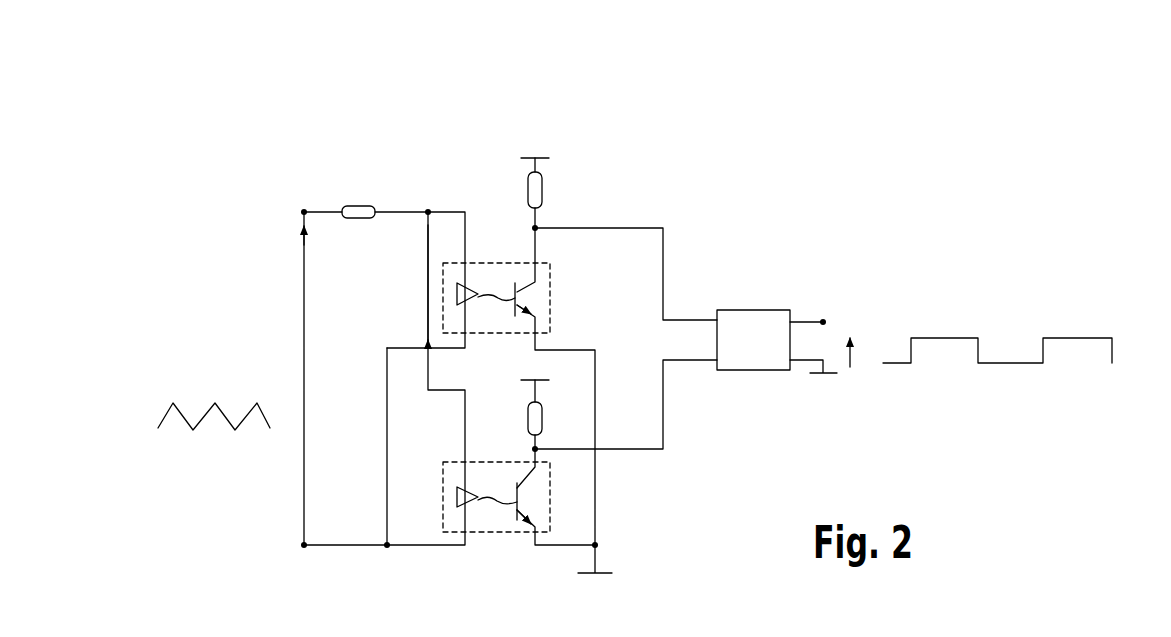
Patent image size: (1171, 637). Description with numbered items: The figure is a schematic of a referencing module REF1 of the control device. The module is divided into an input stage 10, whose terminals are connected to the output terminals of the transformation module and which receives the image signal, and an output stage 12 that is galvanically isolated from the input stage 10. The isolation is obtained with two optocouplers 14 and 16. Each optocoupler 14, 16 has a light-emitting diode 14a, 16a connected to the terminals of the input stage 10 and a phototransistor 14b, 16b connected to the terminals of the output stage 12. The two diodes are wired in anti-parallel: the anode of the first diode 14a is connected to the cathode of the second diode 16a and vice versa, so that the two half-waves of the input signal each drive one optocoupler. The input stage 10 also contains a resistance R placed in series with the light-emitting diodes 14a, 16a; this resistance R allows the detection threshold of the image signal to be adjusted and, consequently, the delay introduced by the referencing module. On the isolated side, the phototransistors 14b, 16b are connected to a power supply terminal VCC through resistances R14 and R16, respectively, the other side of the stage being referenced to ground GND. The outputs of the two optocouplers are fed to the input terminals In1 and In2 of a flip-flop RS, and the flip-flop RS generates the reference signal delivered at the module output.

The input stage 10 is at (475, 136).
The output stage 12 is at (788, 138).
The optocoupler 14 is at (553, 265).
The light-emitting diode 14a is at (470, 297).
The phototransistor 14b is at (532, 300).
The optocoupler 16 is at (518, 542).
The light-emitting diode 16a is at (477, 500).
The phototransistor 16b is at (553, 500).
The resistance R is at (362, 206).
The resistance R14 is at (544, 195).
The resistance R16 is at (544, 424).
The flip-flop RS is at (753, 340).
The input terminal In1 is at (690, 318).
The input terminal In2 is at (690, 362).
The power supply terminal VCC is at (532, 261).
The ground GND is at (711, 493).
The referencing module REF1 is at (600, 64).